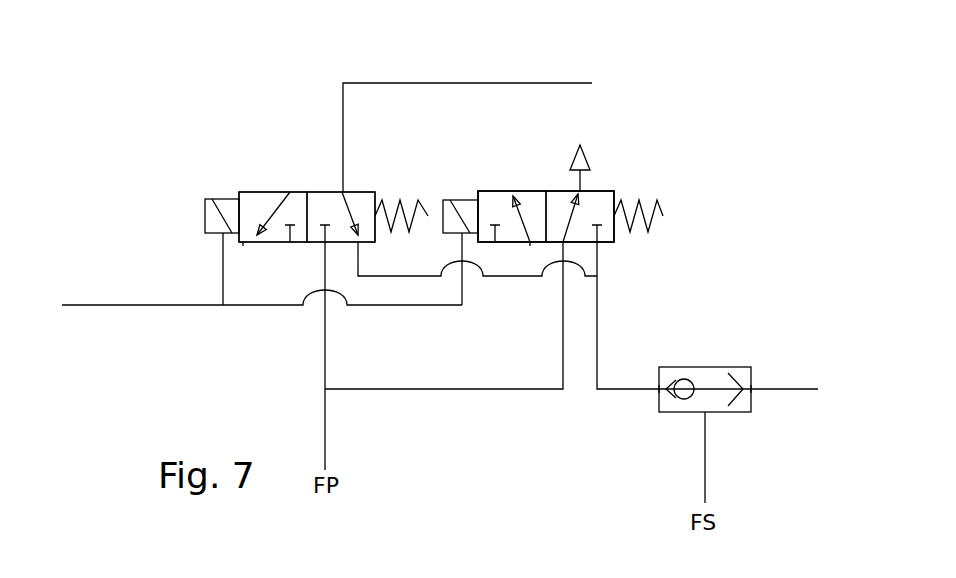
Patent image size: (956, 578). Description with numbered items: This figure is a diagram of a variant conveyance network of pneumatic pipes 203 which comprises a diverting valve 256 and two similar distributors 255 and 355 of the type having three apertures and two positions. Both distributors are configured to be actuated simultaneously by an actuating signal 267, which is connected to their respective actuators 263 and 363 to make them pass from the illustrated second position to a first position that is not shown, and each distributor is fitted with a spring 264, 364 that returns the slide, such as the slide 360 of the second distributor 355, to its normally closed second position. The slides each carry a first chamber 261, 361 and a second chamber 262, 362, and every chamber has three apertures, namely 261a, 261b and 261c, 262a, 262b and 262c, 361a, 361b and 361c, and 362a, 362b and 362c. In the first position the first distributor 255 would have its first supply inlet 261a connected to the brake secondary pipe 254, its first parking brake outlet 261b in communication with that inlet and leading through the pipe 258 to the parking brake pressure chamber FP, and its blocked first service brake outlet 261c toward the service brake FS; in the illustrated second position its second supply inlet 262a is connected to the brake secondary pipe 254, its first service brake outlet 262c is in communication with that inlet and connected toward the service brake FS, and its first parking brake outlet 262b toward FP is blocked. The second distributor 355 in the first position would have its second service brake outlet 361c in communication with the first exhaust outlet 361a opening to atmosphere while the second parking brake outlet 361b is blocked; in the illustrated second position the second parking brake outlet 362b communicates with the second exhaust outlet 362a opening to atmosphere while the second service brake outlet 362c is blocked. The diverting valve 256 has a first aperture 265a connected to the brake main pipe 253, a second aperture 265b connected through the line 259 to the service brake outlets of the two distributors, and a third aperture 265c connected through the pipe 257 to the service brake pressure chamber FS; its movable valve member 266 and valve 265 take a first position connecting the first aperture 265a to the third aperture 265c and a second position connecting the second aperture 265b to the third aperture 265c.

The conveyance network of pneumatic pipes 203 is at (130, 60).
The brake secondary pipe 254 is at (465, 83).
The first distributor 255 is at (190, 163).
The first chamber 261 is at (293, 192).
The first supply inlet 261a is at (273, 192).
The first parking brake outlet 261b is at (243, 246).
The blocked first service brake outlet 261c is at (290, 245).
The second chamber 262 is at (317, 192).
The second supply inlet 262a is at (352, 192).
The blocked first parking brake outlet 262b is at (323, 245).
The first service brake outlet 262c is at (362, 245).
The actuator 263 is at (205, 215).
The spring 264 is at (390, 200).
The actuating signal 267 is at (82, 305).
The fluid pressure line FP 258 is at (327, 438).
The second distributor 355 is at (650, 159).
The slide 360 is at (614, 191).
The first chamber 361 is at (485, 191).
The first exhaust outlet 361a is at (512, 191).
The blocked second parking brake outlet 361b is at (495, 245).
The second service brake outlet 361c is at (530, 246).
The second chamber 362 is at (557, 191).
The second exhaust outlet 362a is at (588, 185).
The second parking brake outlet 362b is at (566, 246).
The blocked second service brake outlet 362c is at (601, 243).
The actuator 363 is at (447, 200).
The spring 364 is at (663, 218).
The connecting line 259 is at (597, 365).
The diverting valve 256 is at (705, 367).
The movable valve member 266 is at (689, 372).
The check valve 265 is at (748, 367).
The first aperture 265a is at (753, 389).
The second aperture 265b is at (657, 389).
The third aperture 265c is at (706, 412).
The fluid supply line FS 257 is at (706, 487).
The brake main pipe 253 is at (805, 389).